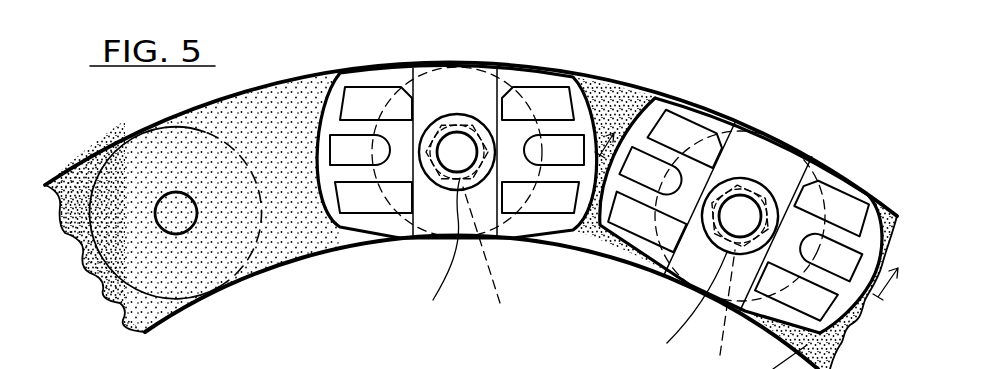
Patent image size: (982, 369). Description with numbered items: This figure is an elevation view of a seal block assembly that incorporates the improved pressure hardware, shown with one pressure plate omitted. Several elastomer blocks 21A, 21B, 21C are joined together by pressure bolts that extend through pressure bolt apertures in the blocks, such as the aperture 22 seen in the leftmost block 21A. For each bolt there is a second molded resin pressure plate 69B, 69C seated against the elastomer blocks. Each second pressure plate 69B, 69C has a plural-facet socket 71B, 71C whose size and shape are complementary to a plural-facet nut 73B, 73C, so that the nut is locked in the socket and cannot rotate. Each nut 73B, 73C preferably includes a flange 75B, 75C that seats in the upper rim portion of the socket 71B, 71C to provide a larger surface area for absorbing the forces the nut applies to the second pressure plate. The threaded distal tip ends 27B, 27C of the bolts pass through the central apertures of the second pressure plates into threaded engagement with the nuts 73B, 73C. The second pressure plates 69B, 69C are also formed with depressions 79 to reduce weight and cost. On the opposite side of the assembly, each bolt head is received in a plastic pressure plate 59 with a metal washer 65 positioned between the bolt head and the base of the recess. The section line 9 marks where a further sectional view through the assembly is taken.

The section line 9— 9 is at (746, 220).
The elastomer block 21A is at (153, 239).
The elastomer block 21B is at (288, 227).
The elastomer block 21C is at (575, 233).
The pressure bolt aperture 22 is at (172, 199).
The distal tip end of bolt 27B is at (468, 97).
The distal tip end of bolt 27C is at (747, 217).
The plastic pressure plate 59 is at (567, 365).
The metal washer 65 is at (353, 359).
The second molded resin pressure plate 69B is at (457, 175).
The second molded resin pressure plate 69C is at (740, 210).
The plural-facet socket 71B is at (427, 255).
The plural-facet socket 71C is at (683, 309).
The plural-facet nut 73B is at (491, 260).
The plural-facet nut 73C is at (716, 309).
The flange of nut 75B is at (499, 112).
The flange of nut 75C is at (750, 187).
The depressions 79 is at (633, 222).